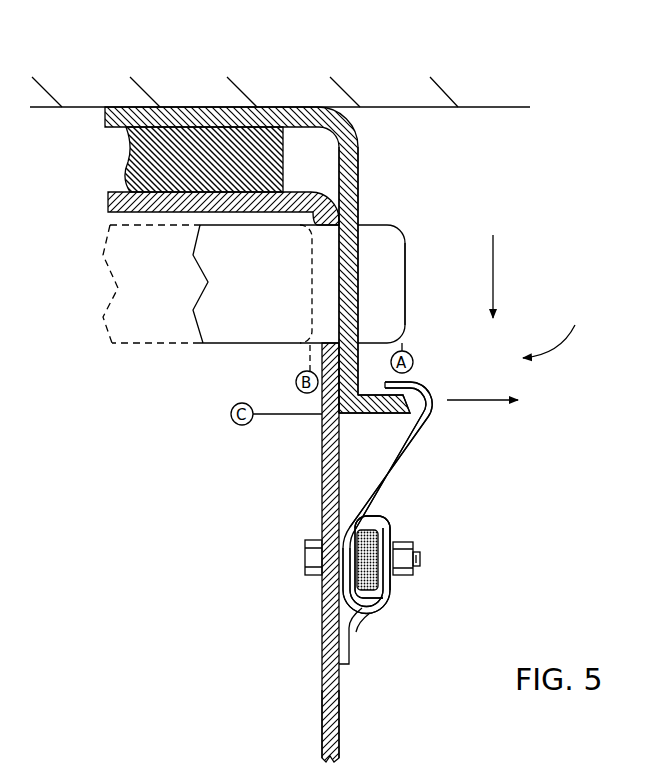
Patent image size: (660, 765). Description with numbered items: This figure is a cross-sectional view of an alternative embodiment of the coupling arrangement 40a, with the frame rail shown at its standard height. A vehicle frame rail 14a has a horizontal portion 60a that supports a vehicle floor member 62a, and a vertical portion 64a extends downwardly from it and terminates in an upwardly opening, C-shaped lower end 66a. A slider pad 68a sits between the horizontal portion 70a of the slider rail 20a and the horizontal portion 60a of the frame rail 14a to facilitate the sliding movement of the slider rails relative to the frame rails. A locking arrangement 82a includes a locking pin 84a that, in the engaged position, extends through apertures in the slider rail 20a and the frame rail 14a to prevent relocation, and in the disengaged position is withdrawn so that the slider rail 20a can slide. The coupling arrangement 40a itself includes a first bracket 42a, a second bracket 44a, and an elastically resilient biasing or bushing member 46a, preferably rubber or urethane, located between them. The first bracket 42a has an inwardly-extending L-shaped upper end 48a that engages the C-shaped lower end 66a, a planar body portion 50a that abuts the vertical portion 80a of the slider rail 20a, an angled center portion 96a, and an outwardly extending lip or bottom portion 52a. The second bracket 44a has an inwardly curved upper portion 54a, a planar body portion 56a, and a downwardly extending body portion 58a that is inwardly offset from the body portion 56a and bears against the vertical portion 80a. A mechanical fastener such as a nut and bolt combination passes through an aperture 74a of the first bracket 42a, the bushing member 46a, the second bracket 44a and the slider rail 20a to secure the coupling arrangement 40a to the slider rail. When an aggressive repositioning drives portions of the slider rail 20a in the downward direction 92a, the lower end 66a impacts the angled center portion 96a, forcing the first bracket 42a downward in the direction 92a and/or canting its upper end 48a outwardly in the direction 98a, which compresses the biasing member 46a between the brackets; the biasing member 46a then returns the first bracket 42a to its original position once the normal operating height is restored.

The vehicle frame rail 14a is at (298, 272).
The slider rail 20a is at (329, 552).
The coupling arrangement 40a is at (560, 329).
The first bracket 42a is at (418, 505).
The second bracket 44a is at (393, 607).
The biasing or bushing member 46a is at (378, 538).
The L-shaped upper end 48a is at (425, 383).
The planar body portion 50a is at (345, 556).
The lip or bottom portion 52a is at (366, 620).
The inwardly curved upper portion 54a is at (378, 522).
The planar body portion 56a is at (392, 585).
The downwardly extending body portion 58a is at (353, 648).
The horizontal portion 60a is at (207, 107).
The vehicle floor member 62a is at (480, 107).
The vertical portion 64a is at (358, 190).
The C-shaped lower end 66a is at (427, 410).
The slider pad 68a is at (265, 178).
The horizontal portion 70a is at (118, 188).
The aperture 74a is at (420, 558).
The vertical portion 80a is at (335, 748).
The locking arrangement 82a is at (414, 271).
The locking pin 84a is at (390, 285).
The downward direction 92a is at (493, 277).
The angled center portion 96a is at (400, 455).
The outward direction 98a is at (481, 400).